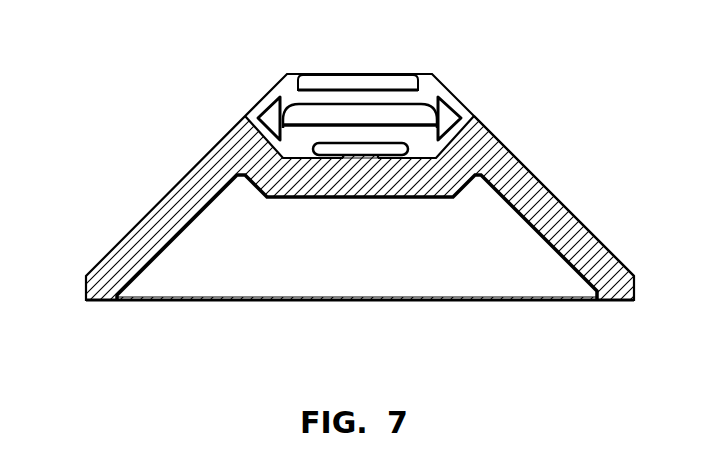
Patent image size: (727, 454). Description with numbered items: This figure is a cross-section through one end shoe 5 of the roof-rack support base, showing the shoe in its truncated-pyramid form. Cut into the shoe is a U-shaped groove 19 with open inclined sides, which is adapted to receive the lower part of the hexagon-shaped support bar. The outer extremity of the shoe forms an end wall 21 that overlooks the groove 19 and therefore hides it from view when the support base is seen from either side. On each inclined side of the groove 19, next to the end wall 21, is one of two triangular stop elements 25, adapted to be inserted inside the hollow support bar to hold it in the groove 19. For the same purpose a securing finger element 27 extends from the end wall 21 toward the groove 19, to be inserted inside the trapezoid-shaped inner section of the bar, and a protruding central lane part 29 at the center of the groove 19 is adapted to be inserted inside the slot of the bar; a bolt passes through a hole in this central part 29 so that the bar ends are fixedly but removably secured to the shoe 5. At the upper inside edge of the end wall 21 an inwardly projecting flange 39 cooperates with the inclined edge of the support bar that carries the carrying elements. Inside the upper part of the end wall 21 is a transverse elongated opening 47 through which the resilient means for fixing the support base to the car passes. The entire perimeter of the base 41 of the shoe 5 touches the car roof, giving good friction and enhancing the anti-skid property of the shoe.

The end shoe 5 is at (102, 206).
The groove 19 is at (476, 116).
The end wall 21 is at (437, 79).
The triangular stop elements 25 is at (266, 113).
The securing finger element 27 is at (320, 148).
The protruding central lane part 29 is at (358, 158).
The inwardly projecting flange 39 is at (391, 82).
The base 41 is at (634, 289).
The transverse elongated opening 47 is at (328, 115).